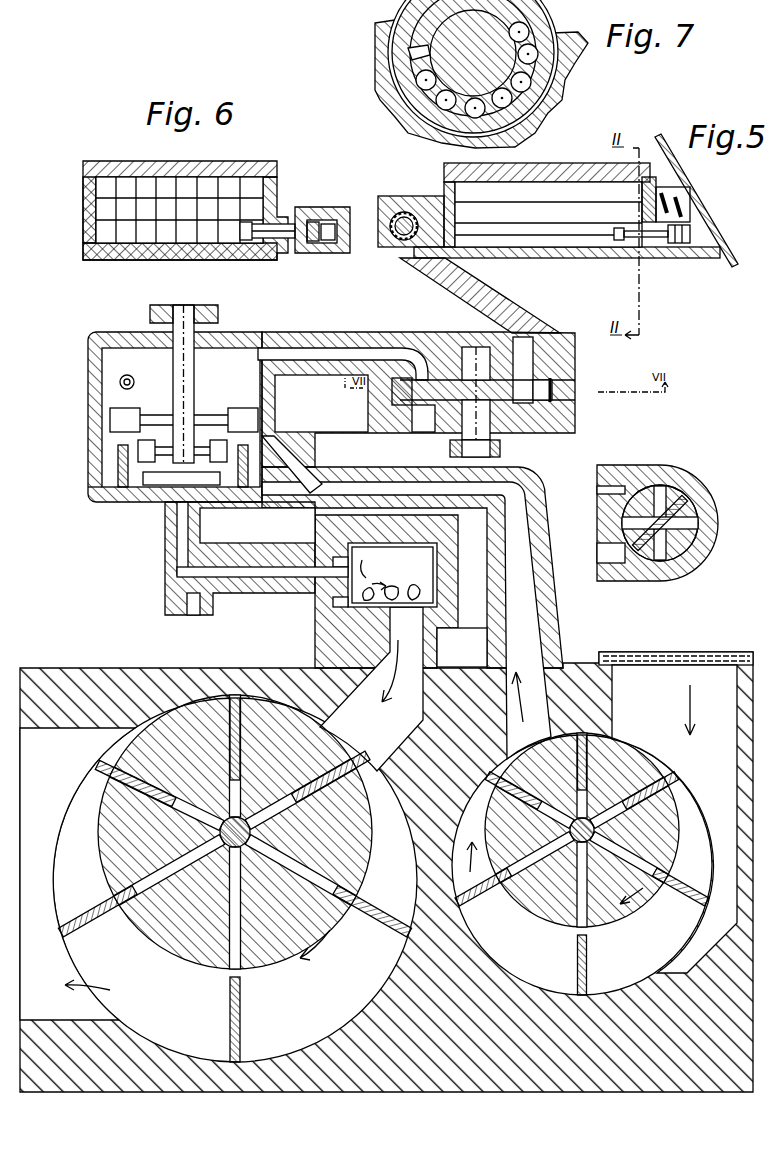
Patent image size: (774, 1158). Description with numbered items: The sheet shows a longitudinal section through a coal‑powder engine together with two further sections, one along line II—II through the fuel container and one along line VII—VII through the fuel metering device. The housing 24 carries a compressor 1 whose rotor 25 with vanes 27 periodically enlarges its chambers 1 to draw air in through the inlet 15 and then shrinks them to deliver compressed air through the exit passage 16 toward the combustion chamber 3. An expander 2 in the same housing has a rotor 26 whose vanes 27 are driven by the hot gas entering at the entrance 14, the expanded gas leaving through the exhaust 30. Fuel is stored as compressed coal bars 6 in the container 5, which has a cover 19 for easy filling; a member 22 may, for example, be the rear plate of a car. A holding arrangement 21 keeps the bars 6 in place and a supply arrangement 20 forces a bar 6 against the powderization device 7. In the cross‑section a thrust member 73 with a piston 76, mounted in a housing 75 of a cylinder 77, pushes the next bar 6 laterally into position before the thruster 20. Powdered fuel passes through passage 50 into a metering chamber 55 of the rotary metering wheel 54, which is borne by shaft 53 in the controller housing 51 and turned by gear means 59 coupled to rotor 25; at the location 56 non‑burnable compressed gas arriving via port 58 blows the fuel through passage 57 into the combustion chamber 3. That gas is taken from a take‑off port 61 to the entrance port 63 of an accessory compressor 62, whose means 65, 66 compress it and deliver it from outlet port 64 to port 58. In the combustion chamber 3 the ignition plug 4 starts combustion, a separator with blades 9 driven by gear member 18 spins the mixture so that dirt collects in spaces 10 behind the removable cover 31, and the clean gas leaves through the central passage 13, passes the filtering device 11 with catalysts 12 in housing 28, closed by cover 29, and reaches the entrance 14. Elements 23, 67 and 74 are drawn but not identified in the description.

In FIG. 5, the compressor 1 is at (552, 960).
In FIG. 5, the expander 2 is at (84, 884).
In FIG. 5, the combustion chamber 3 is at (112, 364).
In FIG. 5, the ignition plug 4 is at (122, 388).
In FIG. 6, the fuel container 5 is at (236, 260).
In FIG. 5, the fuel container 5 is at (566, 252).
In FIG. 6, the coal‑fuel bars 6 is at (127, 235).
In FIG. 5, the coal‑fuel bars 6 is at (505, 232).
In FIG. 5, the powderization device 7 is at (392, 236).
In FIG. 5, the separator blades 9 is at (118, 420).
In FIG. 5, the dirt collection spaces 10 is at (110, 466).
In FIG. 5, the filtering device 11 is at (377, 575).
In FIG. 5, the catalysts 12 is at (400, 586).
In FIG. 5, the passage 13 is at (185, 572).
In FIG. 5, the entrance of expander 14 is at (366, 722).
In FIG. 5, the inlet 15 is at (674, 819).
In FIG. 5, the passage 16 is at (525, 655).
In FIG. 5, the gear member 18 is at (150, 312).
In FIG. 6, the cover 19 is at (100, 168).
In FIG. 5, the cover 19 is at (444, 170).
In FIG. 5, the supply arrangement 20 is at (645, 240).
In FIG. 5, the holding arrangement 21 is at (658, 230).
In FIG. 5, the member 22 is at (732, 268).
In FIG. 5, the inlet 23 is at (640, 652).
In FIG. 5, the housing 24 is at (393, 1090).
In FIG. 5, the compressor rotor 25 is at (532, 906).
In FIG. 5, the expander rotor 26 is at (274, 955).
In FIG. 5, the vanes 27 is at (363, 870).
In FIG. 5, the filter housing 28 is at (314, 622).
In FIG. 5, the cover 29 is at (460, 597).
In FIG. 5, the exhaust 30 is at (60, 959).
In FIG. 5, the combustion chamber cover 31 is at (102, 497).
In FIG. 5, the passage 50 is at (496, 318).
In FIG. 7, the controller housing 51 is at (568, 88).
In FIG. 5, the controller housing 51 is at (560, 345).
In FIG. 5, the shaft 53 is at (490, 362).
In FIG. 7, the rate of flow defining element 54 is at (582, 66).
In FIG. 5, the rate of flow defining element 54 is at (445, 376).
In FIG. 7, the metering chamber 55 is at (546, 108).
In FIG. 5, the metering chamber 55 is at (560, 393).
In FIG. 7, the control chamber location 56 is at (398, 78).
In FIG. 5, the control chamber location 56 is at (392, 394).
In FIG. 7, the transfer passage 57 is at (398, 42).
In FIG. 5, the transfer passage 57 is at (312, 358).
In FIG. 5, the port 58 is at (384, 438).
In FIG. 5, the gear means 59 is at (502, 449).
In FIG. 5, the take‑off port 61 is at (187, 610).
In FIG. 5, the accessory compressor 62 is at (672, 478).
In FIG. 5, the entrance port 63 is at (600, 556).
In FIG. 5, the outlet port 64 is at (600, 490).
In FIG. 5, the compressing means 65 is at (688, 498).
In FIG. 5, the compressing means 66 is at (698, 530).
In FIG. 5, the bore 67 is at (700, 512).
In FIG. 6, the thrust member 73 is at (268, 260).
In FIG. 6, the plunger 74 is at (272, 226).
In FIG. 6, the housing 75 is at (312, 226).
In FIG. 6, the piston 76 is at (330, 226).
In FIG. 6, the cylinder 77 is at (325, 254).